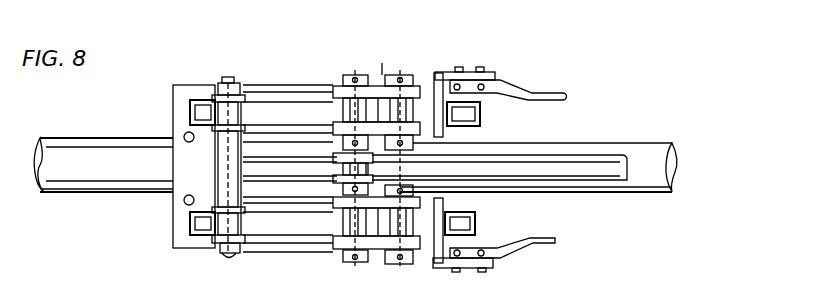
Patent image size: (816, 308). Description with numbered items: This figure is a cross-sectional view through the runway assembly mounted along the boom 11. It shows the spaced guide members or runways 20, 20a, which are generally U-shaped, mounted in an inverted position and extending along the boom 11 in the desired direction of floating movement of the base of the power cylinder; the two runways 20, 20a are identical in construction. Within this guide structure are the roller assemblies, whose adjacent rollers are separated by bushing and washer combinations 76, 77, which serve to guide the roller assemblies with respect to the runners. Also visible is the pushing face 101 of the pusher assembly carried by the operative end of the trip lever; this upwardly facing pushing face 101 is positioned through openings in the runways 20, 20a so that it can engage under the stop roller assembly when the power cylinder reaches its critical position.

The boom 11 is at (648, 148).
The guide runway 20 is at (198, 237).
The guide runway 20a is at (200, 100).
The bushing and washer combination 76 is at (416, 112).
The bushing and washer combination 77 is at (433, 216).
The pushing face 101 is at (445, 133).